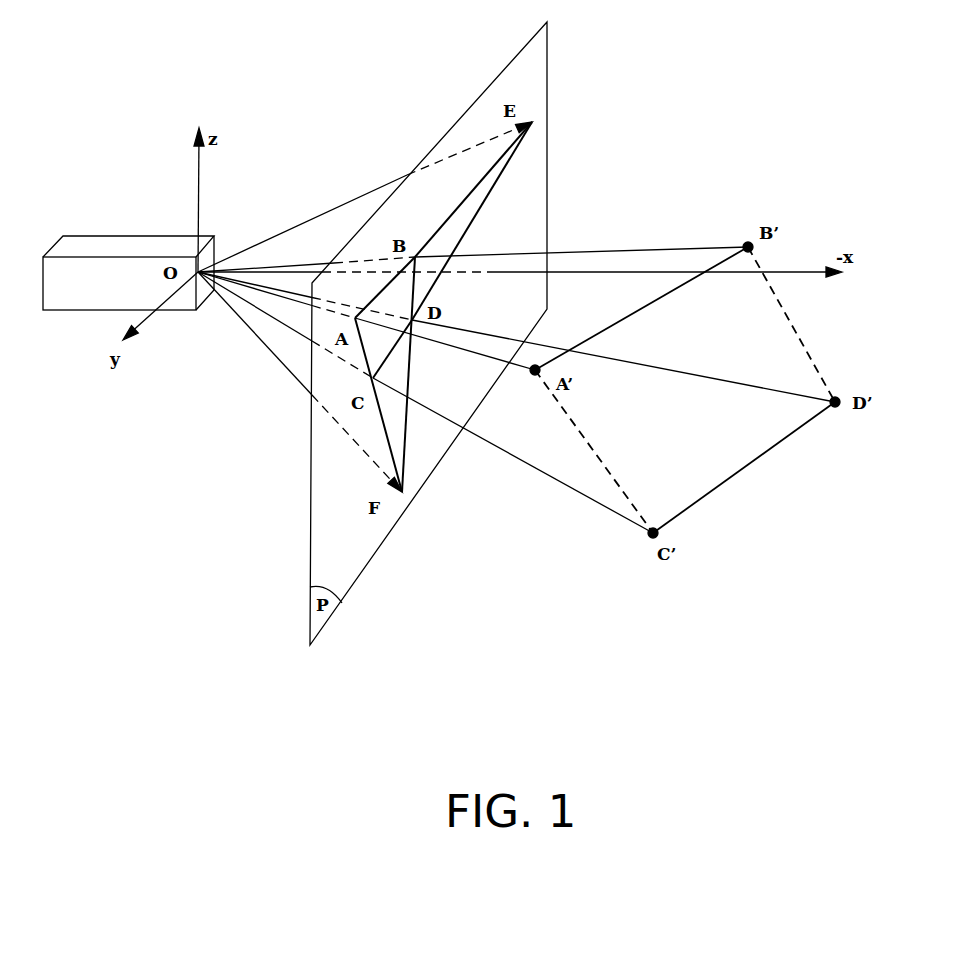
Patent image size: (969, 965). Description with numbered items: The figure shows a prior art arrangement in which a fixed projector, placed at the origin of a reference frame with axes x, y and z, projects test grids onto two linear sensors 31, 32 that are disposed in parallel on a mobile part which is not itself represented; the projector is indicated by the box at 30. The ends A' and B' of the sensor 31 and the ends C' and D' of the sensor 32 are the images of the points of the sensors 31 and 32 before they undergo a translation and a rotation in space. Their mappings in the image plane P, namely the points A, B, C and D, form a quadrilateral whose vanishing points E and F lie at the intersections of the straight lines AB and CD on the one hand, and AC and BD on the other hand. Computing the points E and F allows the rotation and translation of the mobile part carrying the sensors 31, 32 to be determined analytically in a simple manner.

The projector device 30 is at (112, 248).
The sensor 31 is at (695, 295).
The sensor 32 is at (768, 478).